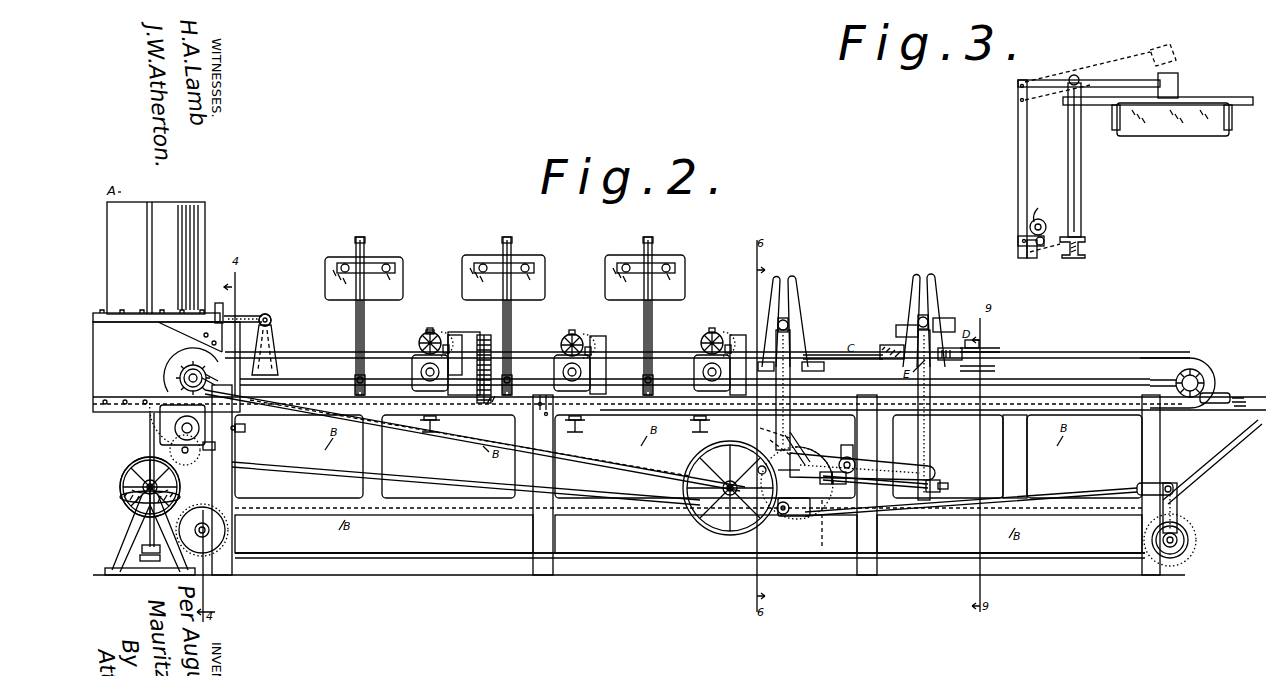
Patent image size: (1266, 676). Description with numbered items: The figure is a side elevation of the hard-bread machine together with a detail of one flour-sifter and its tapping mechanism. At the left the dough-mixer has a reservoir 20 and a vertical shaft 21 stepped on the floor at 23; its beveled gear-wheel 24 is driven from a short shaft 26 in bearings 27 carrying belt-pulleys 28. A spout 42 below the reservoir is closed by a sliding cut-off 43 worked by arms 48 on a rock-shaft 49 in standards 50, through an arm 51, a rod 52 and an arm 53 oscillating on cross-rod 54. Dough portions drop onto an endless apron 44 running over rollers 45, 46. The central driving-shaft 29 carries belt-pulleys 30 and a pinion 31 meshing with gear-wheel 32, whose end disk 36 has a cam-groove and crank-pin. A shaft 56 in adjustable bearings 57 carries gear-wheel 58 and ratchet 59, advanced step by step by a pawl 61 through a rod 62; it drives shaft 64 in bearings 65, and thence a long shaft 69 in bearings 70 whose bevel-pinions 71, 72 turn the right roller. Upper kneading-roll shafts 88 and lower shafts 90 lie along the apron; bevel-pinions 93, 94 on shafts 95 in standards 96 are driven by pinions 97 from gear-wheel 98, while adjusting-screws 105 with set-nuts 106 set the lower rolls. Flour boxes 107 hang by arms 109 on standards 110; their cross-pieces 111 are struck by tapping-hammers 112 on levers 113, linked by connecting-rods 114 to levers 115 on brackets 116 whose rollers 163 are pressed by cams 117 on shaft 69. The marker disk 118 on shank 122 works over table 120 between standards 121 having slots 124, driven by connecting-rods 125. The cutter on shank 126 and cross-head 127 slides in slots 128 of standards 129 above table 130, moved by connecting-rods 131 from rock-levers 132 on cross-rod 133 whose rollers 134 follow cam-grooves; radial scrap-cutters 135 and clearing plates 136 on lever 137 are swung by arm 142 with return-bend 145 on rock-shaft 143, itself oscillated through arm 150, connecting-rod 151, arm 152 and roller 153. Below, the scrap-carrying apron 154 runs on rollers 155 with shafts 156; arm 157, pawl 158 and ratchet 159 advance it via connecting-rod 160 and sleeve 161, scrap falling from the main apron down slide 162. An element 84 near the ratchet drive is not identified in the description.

In FIG. 2, the reservoir 20 is at (200, 199).
In FIG. 2, the vertical shaft 21 is at (150, 203).
In FIG. 2, the step 23 is at (122, 562).
In FIG. 2, the beveled gear-wheel 24 is at (128, 497).
In FIG. 2, the short shaft 26 is at (138, 482).
In FIG. 2, the bearings 27 is at (125, 502).
In FIG. 2, the belt-pulleys 28 is at (135, 471).
In FIG. 2, the driving-shaft 29 is at (761, 466).
In FIG. 2, the belt-pulleys 30 is at (691, 517).
In FIG. 2, the pinion 31 is at (728, 480).
In FIG. 2, the gear-wheel 32 is at (804, 514).
In FIG. 2, the disk 36 is at (797, 483).
In FIG. 2, the spout 42 is at (186, 330).
In FIG. 2, the sliding gate or cut-off 43 is at (217, 305).
In FIG. 2, the endless apron 44 is at (338, 358).
In FIG. 2, the roller 45 is at (180, 367).
In FIG. 2, the roller 46 is at (1201, 356).
In FIG. 2, the arms 48 is at (247, 316).
In FIG. 2, the rock-shaft 49 is at (268, 314).
In FIG. 2, the standards 50 is at (272, 320).
In FIG. 2, the arm 51 is at (279, 343).
In FIG. 2, the rod 52 is at (640, 453).
In FIG. 2, the arm 53 is at (776, 443).
In FIG. 2, the cross-rod 54 is at (766, 424).
In FIG. 2, the shaft 56 is at (206, 428).
In FIG. 2, the bearings 57 is at (173, 360).
In FIG. 2, the gear-wheel 58 is at (184, 452).
In FIG. 2, the ratchet 59 is at (140, 426).
In FIG. 2, the pawl 61 is at (216, 448).
In FIG. 2, the rod 62 is at (319, 475).
In FIG. 2, the shaft 64 is at (205, 376).
In FIG. 2, the bearings 65 is at (165, 377).
In FIG. 2, the shaft 69 is at (695, 374).
In FIG. 3, the shaft 69 is at (1042, 225).
In FIG. 2, the bearings 70 is at (846, 468).
In FIG. 2, the bevel-pinion 71 is at (1222, 371).
In FIG. 2, the bevel-pinion 72 is at (1190, 369).
In FIG. 2, the stop 84 is at (247, 426).
In FIG. 2, the shafts 88 is at (424, 332).
In FIG. 2, the shafts 90 is at (445, 371).
In FIG. 2, the bevel-pinions 93 is at (419, 345).
In FIG. 2, the bevel-pinions 94 is at (588, 336).
In FIG. 2, the shaft 95 is at (623, 347).
In FIG. 2, the standards 96 is at (470, 342).
In FIG. 2, the pinion 97 is at (490, 348).
In FIG. 2, the gear-wheel 98 is at (490, 358).
In FIG. 2, the adjusting-screws 105 is at (423, 432).
In FIG. 2, the set-nuts 106 is at (435, 422).
In FIG. 2, the boxes 107 is at (325, 269).
In FIG. 3, the boxes 107 is at (1210, 133).
In FIG. 2, the arms 109 is at (356, 278).
In FIG. 3, the arms 109 is at (1104, 106).
In FIG. 2, the standards 110 is at (364, 332).
In FIG. 3, the standards 110 is at (1082, 185).
In FIG. 2, the cross-pieces 111 is at (390, 262).
In FIG. 3, the cross-pieces 111 is at (1178, 97).
In FIG. 3, the tapping-hammers 112 is at (1178, 80).
In FIG. 2, the levers 113 is at (364, 240).
In FIG. 3, the levers 113 is at (1118, 86).
In FIG. 2, the connecting-rods 114 is at (357, 307).
In FIG. 3, the connecting-rods 114 is at (1018, 139).
In FIG. 2, the lever 115 is at (502, 405).
In FIG. 3, the lever 115 is at (1028, 258).
In FIG. 2, the bracket 116 is at (365, 390).
In FIG. 3, the bracket 116 is at (1066, 258).
In FIG. 2, the cams 117 is at (364, 370).
In FIG. 3, the cams 117 is at (1040, 210).
In FIG. 2, the disk 118 is at (822, 355).
In FIG. 2, the table 120 is at (800, 370).
In FIG. 2, the standards 121 is at (798, 296).
In FIG. 2, the shank 122 is at (791, 320).
In FIG. 2, the slots 124 is at (786, 282).
In FIG. 2, the connecting-rods 125 is at (790, 341).
In FIG. 2, the shank 126 is at (918, 317).
In FIG. 2, the cross-head 127 is at (918, 326).
In FIG. 2, the slots 128 is at (924, 281).
In FIG. 2, the standards 129 is at (938, 321).
In FIG. 2, the table 130 is at (992, 367).
In FIG. 2, the connecting-rods 131 is at (930, 443).
In FIG. 2, the rock-levers 132 is at (862, 466).
In FIG. 2, the cross-rod 133 is at (847, 455).
In FIG. 2, the rollers 134 is at (790, 452).
In FIG. 2, the radial scrap-cutters 135 is at (892, 352).
In FIG. 2, the plates 136 is at (993, 350).
In FIG. 2, the lever 137 is at (986, 345).
In FIG. 2, the arm 142 is at (896, 328).
In FIG. 2, the rock-shaft 143 is at (930, 463).
In FIG. 2, the return-bend 145 is at (955, 322).
In FIG. 2, the arm 150 is at (938, 483).
In FIG. 2, the connecting-rod 151 is at (908, 496).
In FIG. 2, the arm 152 is at (792, 442).
In FIG. 2, the roller 153 is at (832, 525).
In FIG. 2, the endless scrap-carrying apron 154 is at (447, 556).
In FIG. 2, the rollers 155 is at (222, 524).
In FIG. 2, the shafts 156 is at (210, 533).
In FIG. 2, the arm 157 is at (1177, 510).
In FIG. 2, the pawl 158 is at (1160, 535).
In FIG. 2, the ratchet 159 is at (1184, 545).
In FIG. 2, the connecting-rod 160 is at (1083, 494).
In FIG. 2, the sleeve 161 is at (783, 514).
In FIG. 2, the inwardly-inclined slide 162 is at (1188, 428).
In FIG. 3, the rollers 163 is at (1018, 238).